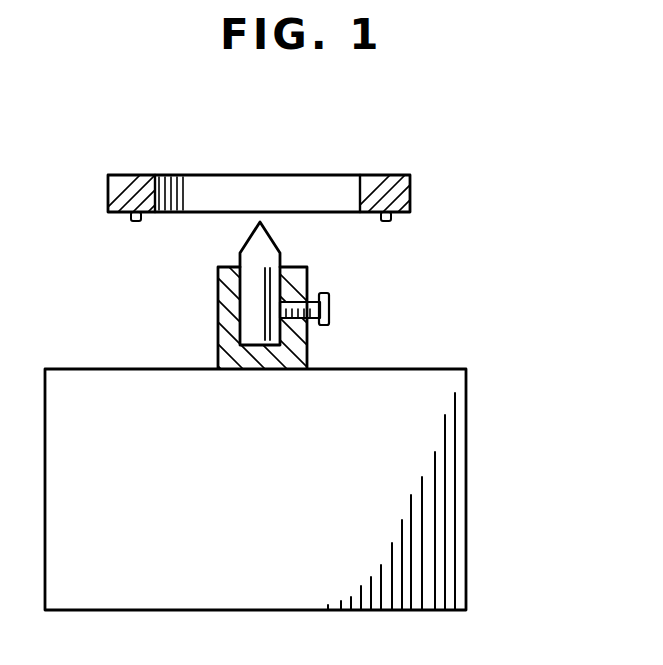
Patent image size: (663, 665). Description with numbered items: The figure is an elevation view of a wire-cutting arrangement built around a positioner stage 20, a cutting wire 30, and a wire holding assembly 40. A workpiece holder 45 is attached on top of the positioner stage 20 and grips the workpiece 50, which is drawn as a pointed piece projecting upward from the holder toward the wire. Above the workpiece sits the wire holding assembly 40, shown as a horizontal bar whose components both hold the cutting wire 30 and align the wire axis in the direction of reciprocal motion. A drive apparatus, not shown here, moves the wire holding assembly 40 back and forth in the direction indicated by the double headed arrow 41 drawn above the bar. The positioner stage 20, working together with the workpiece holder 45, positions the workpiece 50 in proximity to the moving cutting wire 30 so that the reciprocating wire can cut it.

The positioner stage 20 is at (452, 435).
The cutting wire 30 is at (324, 220).
The wire holding assembly 40 is at (410, 195).
The double headed arrow 41 is at (104, 121).
The tool holder block 45 is at (207, 317).
The workpiece 50 is at (243, 253).